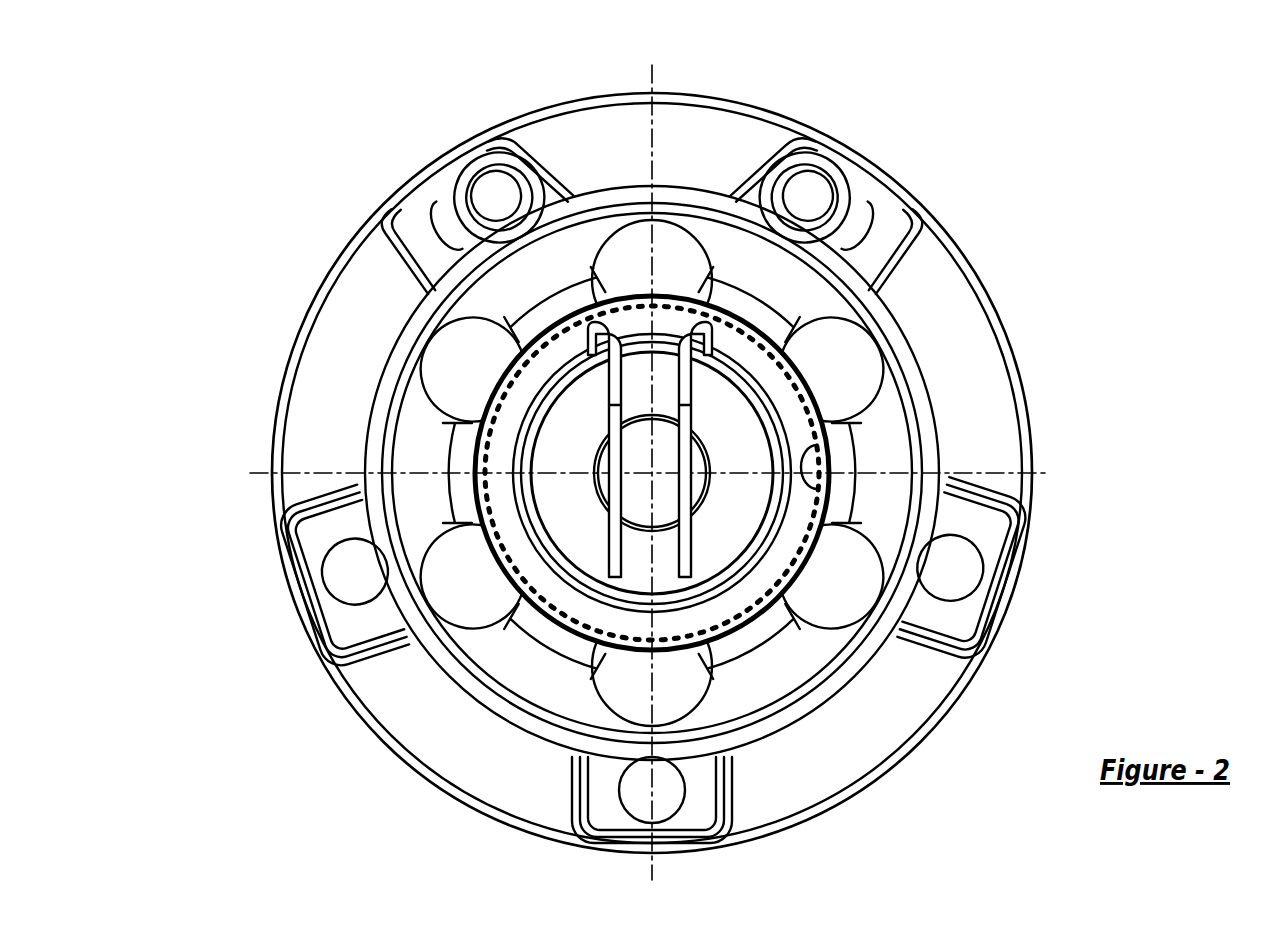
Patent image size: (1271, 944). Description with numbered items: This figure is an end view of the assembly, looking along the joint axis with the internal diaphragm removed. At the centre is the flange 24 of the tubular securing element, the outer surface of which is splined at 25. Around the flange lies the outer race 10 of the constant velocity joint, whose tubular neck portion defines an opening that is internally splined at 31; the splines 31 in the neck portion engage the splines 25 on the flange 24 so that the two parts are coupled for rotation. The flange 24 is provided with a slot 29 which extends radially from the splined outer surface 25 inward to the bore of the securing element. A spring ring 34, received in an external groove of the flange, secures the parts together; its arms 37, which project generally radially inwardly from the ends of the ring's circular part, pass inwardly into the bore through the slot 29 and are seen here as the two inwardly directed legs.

The outer race 10 is at (886, 309).
The flange 24 is at (788, 418).
The splines 25 is at (805, 473).
The splines 31 is at (820, 496).
The slot 29 is at (672, 327).
The spring ring 34 is at (683, 393).
The arms 37 is at (685, 550).